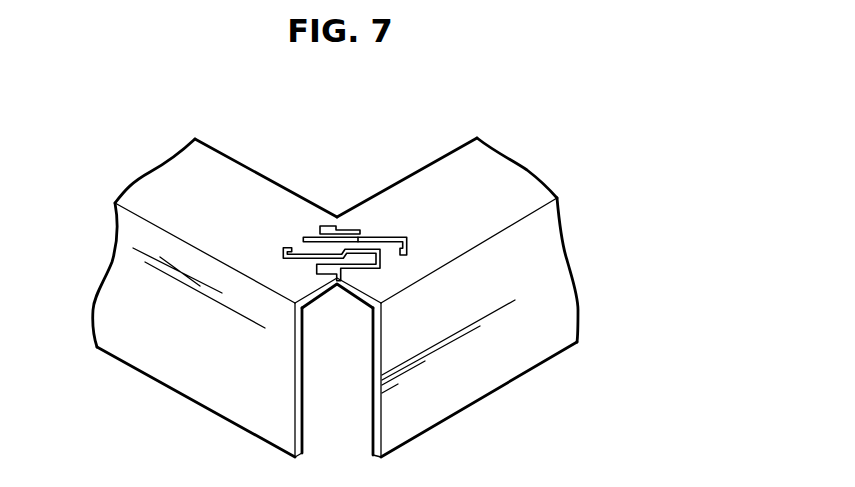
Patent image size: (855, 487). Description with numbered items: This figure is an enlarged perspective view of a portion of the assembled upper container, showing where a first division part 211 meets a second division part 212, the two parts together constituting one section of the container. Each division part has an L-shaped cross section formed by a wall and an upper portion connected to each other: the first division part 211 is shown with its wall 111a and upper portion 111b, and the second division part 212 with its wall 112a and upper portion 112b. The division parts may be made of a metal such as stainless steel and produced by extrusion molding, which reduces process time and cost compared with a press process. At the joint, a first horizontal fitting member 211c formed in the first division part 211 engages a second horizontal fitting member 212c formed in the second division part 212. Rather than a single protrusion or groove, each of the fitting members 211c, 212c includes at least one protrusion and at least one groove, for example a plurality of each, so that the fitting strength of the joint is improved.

The first division part 211 is at (206, 273).
The second division part 212 is at (472, 271).
The wall 111a is at (215, 392).
The upper portion 111b is at (233, 180).
The wall 112a is at (472, 385).
The upper portion 112b is at (447, 170).
The first horizontal fitting member 211c is at (347, 225).
The second horizontal fitting member 212c is at (310, 228).